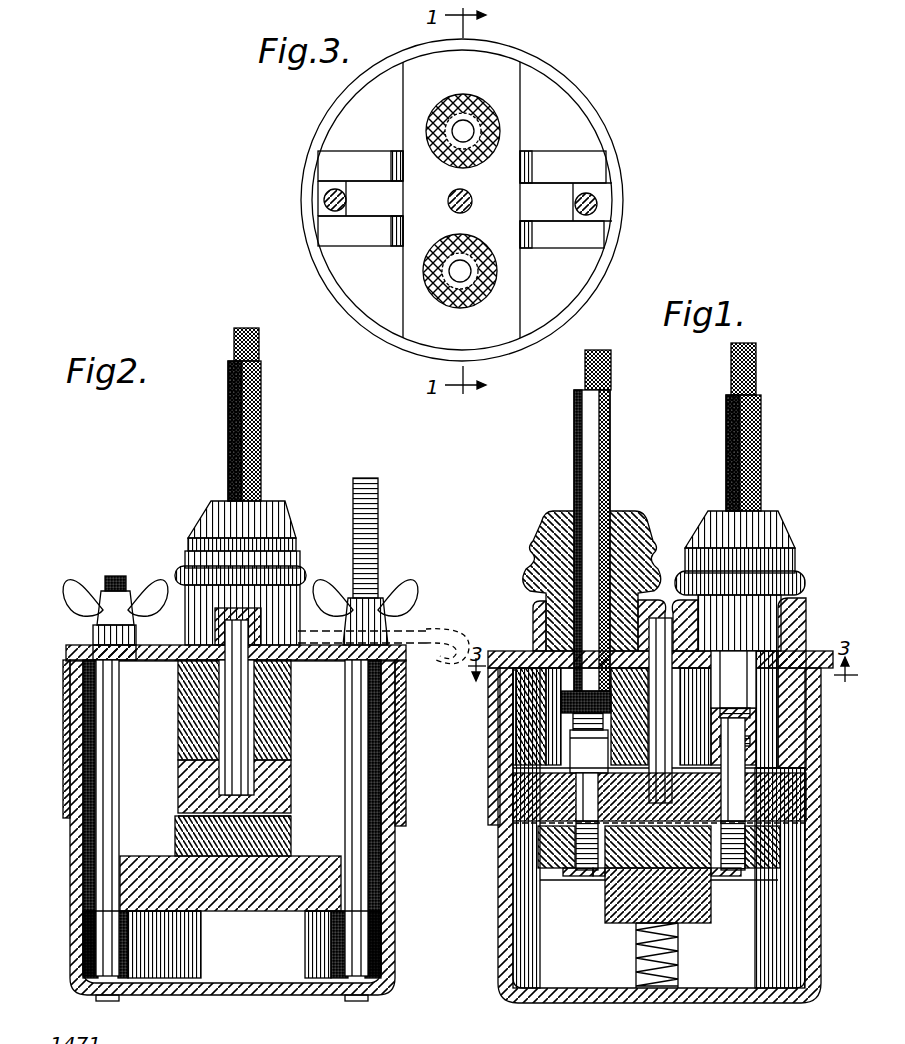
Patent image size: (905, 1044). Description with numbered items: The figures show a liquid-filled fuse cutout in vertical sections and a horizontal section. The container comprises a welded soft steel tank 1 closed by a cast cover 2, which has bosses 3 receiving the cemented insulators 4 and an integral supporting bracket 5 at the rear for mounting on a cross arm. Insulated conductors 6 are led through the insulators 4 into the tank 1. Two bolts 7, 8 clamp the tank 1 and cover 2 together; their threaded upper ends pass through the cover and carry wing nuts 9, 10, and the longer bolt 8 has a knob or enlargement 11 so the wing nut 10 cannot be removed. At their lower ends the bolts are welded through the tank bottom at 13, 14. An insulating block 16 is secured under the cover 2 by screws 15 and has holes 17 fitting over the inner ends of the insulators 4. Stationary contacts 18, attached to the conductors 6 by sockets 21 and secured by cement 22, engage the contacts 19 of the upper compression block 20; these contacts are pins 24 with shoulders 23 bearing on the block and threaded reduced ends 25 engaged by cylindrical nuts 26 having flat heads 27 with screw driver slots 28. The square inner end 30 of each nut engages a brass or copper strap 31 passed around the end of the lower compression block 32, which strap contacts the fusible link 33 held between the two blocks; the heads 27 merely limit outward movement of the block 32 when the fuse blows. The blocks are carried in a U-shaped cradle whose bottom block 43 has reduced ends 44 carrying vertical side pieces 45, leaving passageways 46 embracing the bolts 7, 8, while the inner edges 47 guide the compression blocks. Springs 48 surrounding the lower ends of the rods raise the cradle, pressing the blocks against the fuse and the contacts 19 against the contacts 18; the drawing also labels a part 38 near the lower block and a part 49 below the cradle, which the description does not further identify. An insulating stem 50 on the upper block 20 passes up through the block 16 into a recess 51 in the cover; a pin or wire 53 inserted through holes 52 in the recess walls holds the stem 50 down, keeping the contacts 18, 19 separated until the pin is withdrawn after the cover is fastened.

In FIG. 3, the tank 1 is at (592, 281).
In FIG. 2, the tank 1 is at (384, 877).
In FIG. 1, the tank 1 is at (659, 835).
In FIG. 3, the cover 2 is at (262, 178).
In FIG. 2, the cover 2 is at (70, 636).
In FIG. 1, the cover 2 is at (790, 643).
In FIG. 1, the bosses 3 is at (668, 590).
In FIG. 3, the insulators 4 is at (447, 100).
In FIG. 2, the insulators 4 is at (240, 573).
In FIG. 1, the insulators 4 is at (708, 517).
In FIG. 2, the supporting bracket 5 is at (394, 822).
In FIG. 1, the supporting bracket 5 is at (504, 823).
In FIG. 3, the insulated conductors 6 is at (438, 97).
In FIG. 2, the insulated conductors 6 is at (244, 414).
In FIG. 1, the insulated conductors 6 is at (720, 420).
In FIG. 3, the bolt 7 is at (318, 204).
In FIG. 2, the bolt 7 is at (104, 783).
In FIG. 3, the bolt 8 is at (588, 193).
In FIG. 2, the bolt 8 is at (346, 738).
In FIG. 2, the wing nut 9 is at (84, 575).
In FIG. 2, the wing nut 10 is at (387, 578).
In FIG. 2, the knob or enlargement 11 is at (380, 531).
In FIG. 1, the knob or enlargement 11 is at (737, 702).
In FIG. 2, the weld 13 is at (98, 986).
In FIG. 2, the weld 14 is at (343, 988).
In FIG. 1, the weld 14 is at (712, 735).
In FIG. 2, the screws 15 is at (175, 633).
In FIG. 1, the screws 15 is at (600, 730).
In FIG. 3, the insulating block 16 is at (498, 72).
In FIG. 2, the insulating block 16 is at (170, 716).
In FIG. 1, the insulating block 16 is at (518, 660).
In FIG. 1, the holes 17 is at (514, 723).
In FIG. 1, the stationary contacts 18 is at (512, 742).
In FIG. 1, the contacts 19 is at (512, 763).
In FIG. 1, the upper compression block 20 is at (800, 798).
In FIG. 1, the sockets 21 is at (510, 707).
In FIG. 1, the cement or compound 22 is at (500, 680).
In FIG. 1, the shoulders 23 is at (512, 783).
In FIG. 1, the pins 24 is at (512, 800).
In FIG. 1, the threaded reduced ends 25 is at (530, 843).
In FIG. 1, the cylindrical nuts 26 is at (560, 868).
In FIG. 1, the flat heads 27 is at (572, 908).
In FIG. 1, the screw driver slots 28 is at (592, 870).
In FIG. 1, the square inner end 30 is at (587, 821).
In FIG. 1, the strap 31 is at (750, 880).
In FIG. 1, the lower compression block 32 is at (712, 870).
In FIG. 2, the fusible link 33 is at (170, 826).
In FIG. 1, the fusible link 33 is at (730, 794).
In FIG. 1, the plate 38 is at (740, 880).
In FIG. 1, the bottom block 43 is at (605, 916).
In FIG. 3, the reduced ends 44 is at (358, 197).
In FIG. 3, the vertical side pieces 45 is at (570, 157).
In FIG. 2, the vertical side pieces 45 is at (83, 828).
In FIG. 2, the passageways 46 is at (318, 908).
In FIG. 2, the inner edges 47 is at (128, 921).
In FIG. 2, the springs 48 is at (108, 947).
In FIG. 1, the spring 49 is at (671, 937).
In FIG. 3, the stem 50 is at (441, 196).
In FIG. 2, the stem 50 is at (222, 698).
In FIG. 1, the stem 50 is at (700, 681).
In FIG. 1, the recess 51 is at (688, 626).
In FIG. 2, the holes 52 is at (250, 594).
In FIG. 2, the pin or wire 53 is at (434, 610).